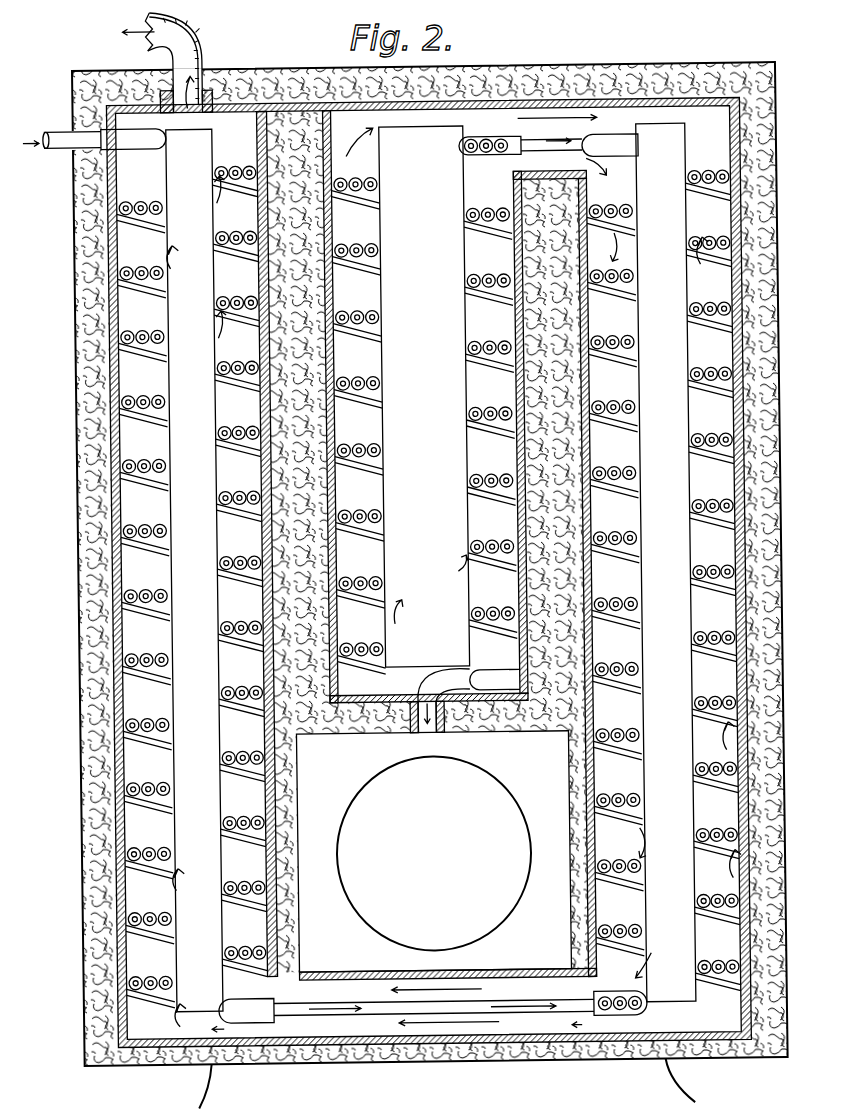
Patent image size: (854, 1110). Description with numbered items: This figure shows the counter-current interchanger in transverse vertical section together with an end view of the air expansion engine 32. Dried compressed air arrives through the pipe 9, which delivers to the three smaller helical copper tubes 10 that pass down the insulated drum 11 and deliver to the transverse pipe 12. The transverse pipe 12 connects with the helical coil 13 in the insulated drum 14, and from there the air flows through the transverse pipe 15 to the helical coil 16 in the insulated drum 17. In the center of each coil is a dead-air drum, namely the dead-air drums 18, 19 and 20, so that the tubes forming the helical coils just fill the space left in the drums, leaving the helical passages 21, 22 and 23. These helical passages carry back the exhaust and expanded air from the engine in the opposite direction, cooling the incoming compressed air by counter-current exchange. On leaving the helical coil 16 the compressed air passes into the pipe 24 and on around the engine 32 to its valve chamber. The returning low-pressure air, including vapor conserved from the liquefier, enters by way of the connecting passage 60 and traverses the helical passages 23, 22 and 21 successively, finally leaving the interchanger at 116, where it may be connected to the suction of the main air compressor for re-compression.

The pipe 9 is at (47, 152).
The helical copper tubes 10 is at (246, 180).
The insulated drum 11 is at (105, 840).
The transverse pipe 12 is at (360, 1019).
The helical coil 13 is at (714, 190).
The insulated drum 14 is at (740, 479).
The transverse pipe 15 is at (559, 151).
The helical coil 16 is at (501, 223).
The insulated drum 17 is at (328, 555).
The dead-air drum 18 is at (156, 552).
The dead-air drum 19 is at (669, 336).
The dead-air drum 20 is at (411, 161).
The helical passage 21 is at (229, 318).
The helical passage 22 is at (697, 405).
The helical passage 23 is at (353, 230).
The pipe 24 is at (421, 733).
The engine 32 is at (367, 910).
The connecting passage 60 is at (407, 691).
The outlet of low-pressure conduit 116 is at (170, 43).